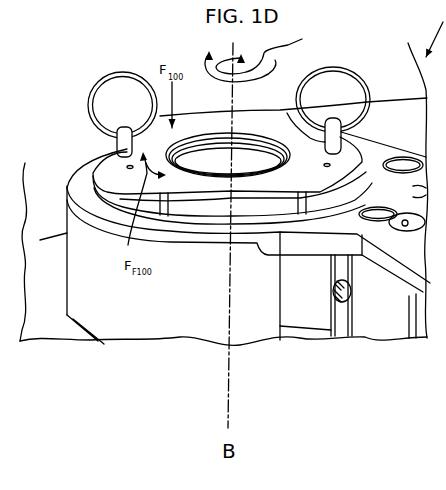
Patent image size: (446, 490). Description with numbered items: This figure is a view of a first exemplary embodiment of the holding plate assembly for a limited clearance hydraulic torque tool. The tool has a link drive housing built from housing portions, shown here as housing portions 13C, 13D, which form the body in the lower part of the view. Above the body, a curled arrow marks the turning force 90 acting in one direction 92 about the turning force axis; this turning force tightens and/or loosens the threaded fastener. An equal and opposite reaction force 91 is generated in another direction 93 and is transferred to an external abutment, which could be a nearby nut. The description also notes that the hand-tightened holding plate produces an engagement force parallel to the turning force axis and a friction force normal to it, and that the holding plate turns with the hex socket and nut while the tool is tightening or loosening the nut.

The housing body portion 13C is at (85, 170).
The housing lower portion 13D is at (73, 330).
The turning force 90 is at (267, 53).
The reaction force 91 is at (270, 72).
The one direction 92 is at (288, 47).
The another direction 93 is at (272, 59).